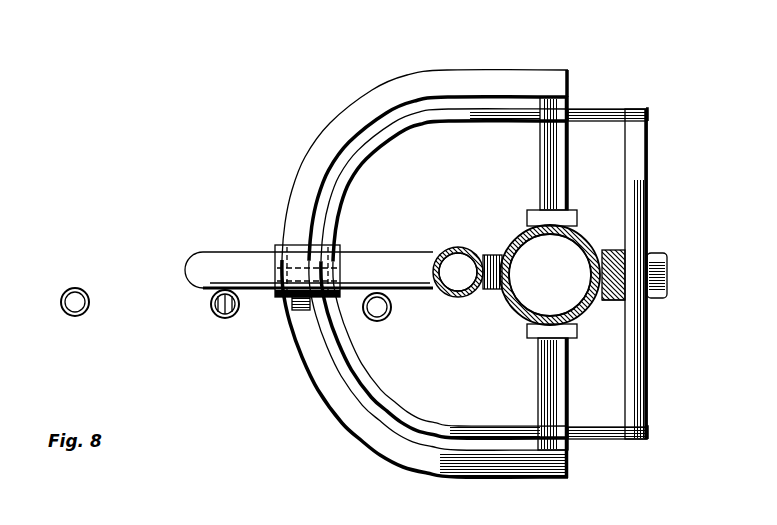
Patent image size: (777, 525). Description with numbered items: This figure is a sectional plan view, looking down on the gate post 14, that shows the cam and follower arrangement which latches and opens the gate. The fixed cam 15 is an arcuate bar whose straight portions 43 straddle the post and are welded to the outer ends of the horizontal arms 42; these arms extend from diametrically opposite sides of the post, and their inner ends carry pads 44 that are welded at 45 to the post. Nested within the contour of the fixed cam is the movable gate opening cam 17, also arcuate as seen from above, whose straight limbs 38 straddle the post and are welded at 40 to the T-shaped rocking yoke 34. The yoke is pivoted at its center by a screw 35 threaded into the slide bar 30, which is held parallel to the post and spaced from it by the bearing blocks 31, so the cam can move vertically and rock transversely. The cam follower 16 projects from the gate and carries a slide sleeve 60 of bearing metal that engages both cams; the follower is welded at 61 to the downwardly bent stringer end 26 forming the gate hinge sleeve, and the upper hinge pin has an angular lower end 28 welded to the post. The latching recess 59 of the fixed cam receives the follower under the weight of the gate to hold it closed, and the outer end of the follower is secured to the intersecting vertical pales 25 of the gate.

The gate post 14 is at (518, 304).
The fixed cam 15 is at (326, 416).
The cam follower 16 is at (397, 250).
The gate opening cam 17 is at (382, 384).
The vertical pales 25 is at (90, 304).
The downwardly bent stringer end 26 is at (458, 247).
The angular lower end 28 is at (492, 296).
The slide bar 30 is at (616, 302).
The bearing block 31 is at (606, 250).
The rocking yoke 34 is at (640, 203).
The screw 35 is at (668, 274).
The straight limb 38 is at (607, 115).
The weld 40 is at (648, 115).
The horizontal arm 42 is at (548, 157).
The straight portion 43 is at (540, 78).
The pad 44 is at (566, 222).
The weld 45 is at (530, 232).
The latching recess 59 is at (290, 308).
The slide sleeve 60 is at (282, 245).
The weld 61 is at (438, 252).